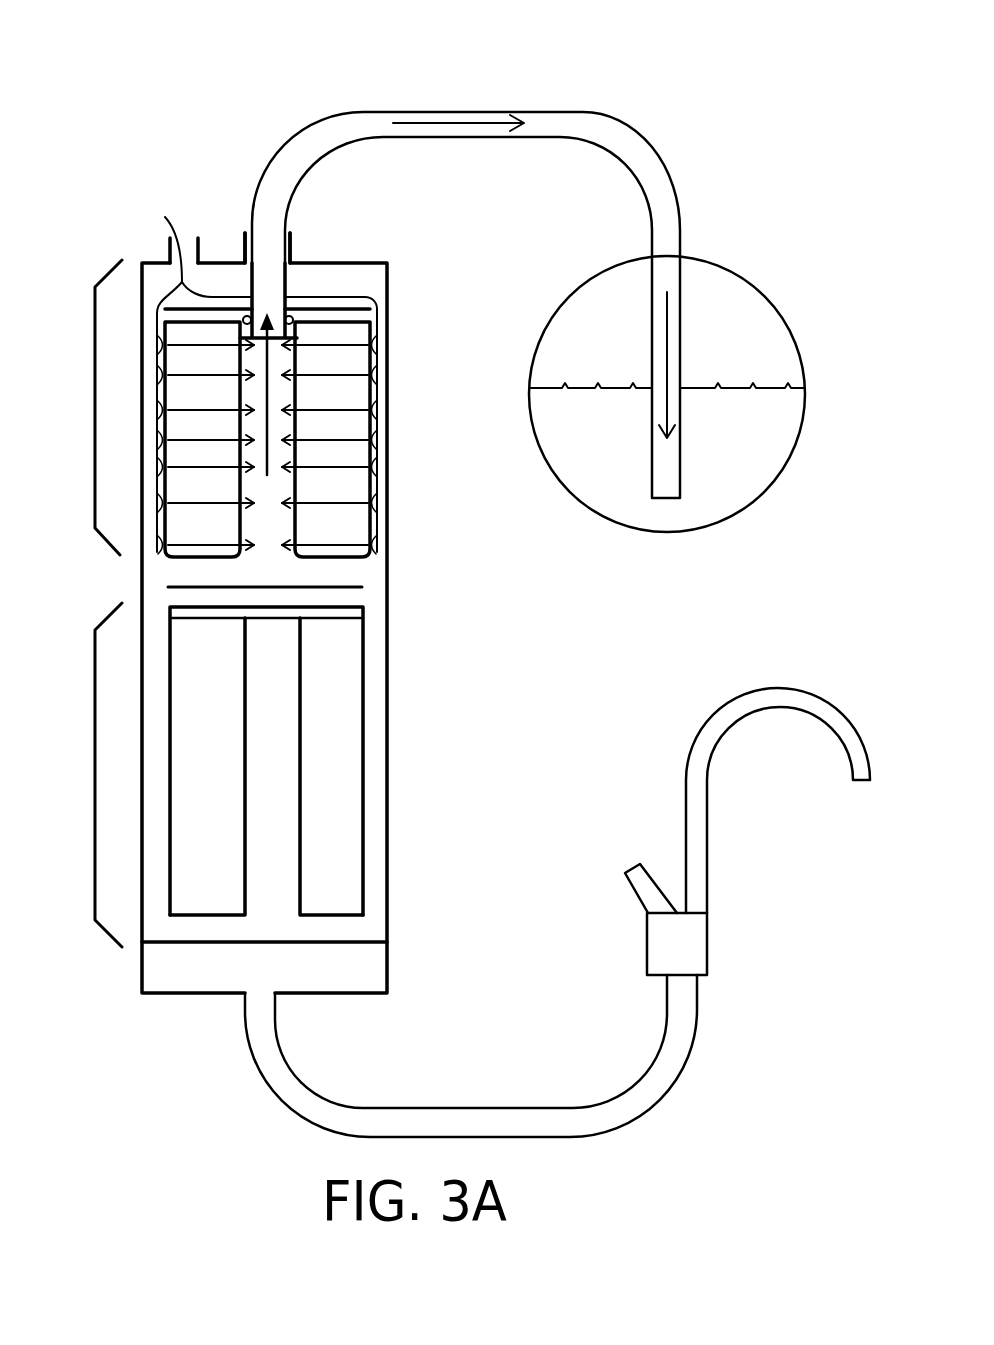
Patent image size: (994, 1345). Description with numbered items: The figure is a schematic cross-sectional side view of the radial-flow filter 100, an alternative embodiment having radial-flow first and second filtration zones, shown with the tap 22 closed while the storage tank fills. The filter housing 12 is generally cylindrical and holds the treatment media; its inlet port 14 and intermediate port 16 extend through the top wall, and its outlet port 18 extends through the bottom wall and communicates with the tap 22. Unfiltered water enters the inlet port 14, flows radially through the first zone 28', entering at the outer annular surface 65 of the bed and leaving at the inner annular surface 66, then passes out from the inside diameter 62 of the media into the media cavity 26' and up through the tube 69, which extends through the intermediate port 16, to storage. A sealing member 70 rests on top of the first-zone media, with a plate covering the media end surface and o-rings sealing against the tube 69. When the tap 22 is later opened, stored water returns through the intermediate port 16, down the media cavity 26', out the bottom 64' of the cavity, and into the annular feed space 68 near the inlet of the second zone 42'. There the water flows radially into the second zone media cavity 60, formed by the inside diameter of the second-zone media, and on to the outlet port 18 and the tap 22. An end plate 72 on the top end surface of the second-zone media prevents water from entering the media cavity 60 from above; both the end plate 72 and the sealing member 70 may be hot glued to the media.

The radial-flow filter 100 is at (205, 130).
The filter housing 12 is at (388, 548).
The inlet port 14 is at (167, 250).
The intermediate port 16 is at (291, 246).
The outlet port 18 is at (276, 1008).
The tap 22 is at (714, 992).
The media cavity 26' is at (367, 439).
The first zone 28' is at (81, 407).
The second zone 42' is at (81, 775).
The second zone media cavity 60 is at (270, 786).
The inside diameter 62 is at (300, 488).
The bottom of the cavity 64' is at (327, 581).
The outer annular surface 65 is at (155, 392).
The inner annular surface 66 is at (297, 426).
The annular feed space 68 is at (378, 663).
The tube 69 is at (263, 194).
The sealing member 70 is at (343, 312).
The end plate 72 is at (345, 607).